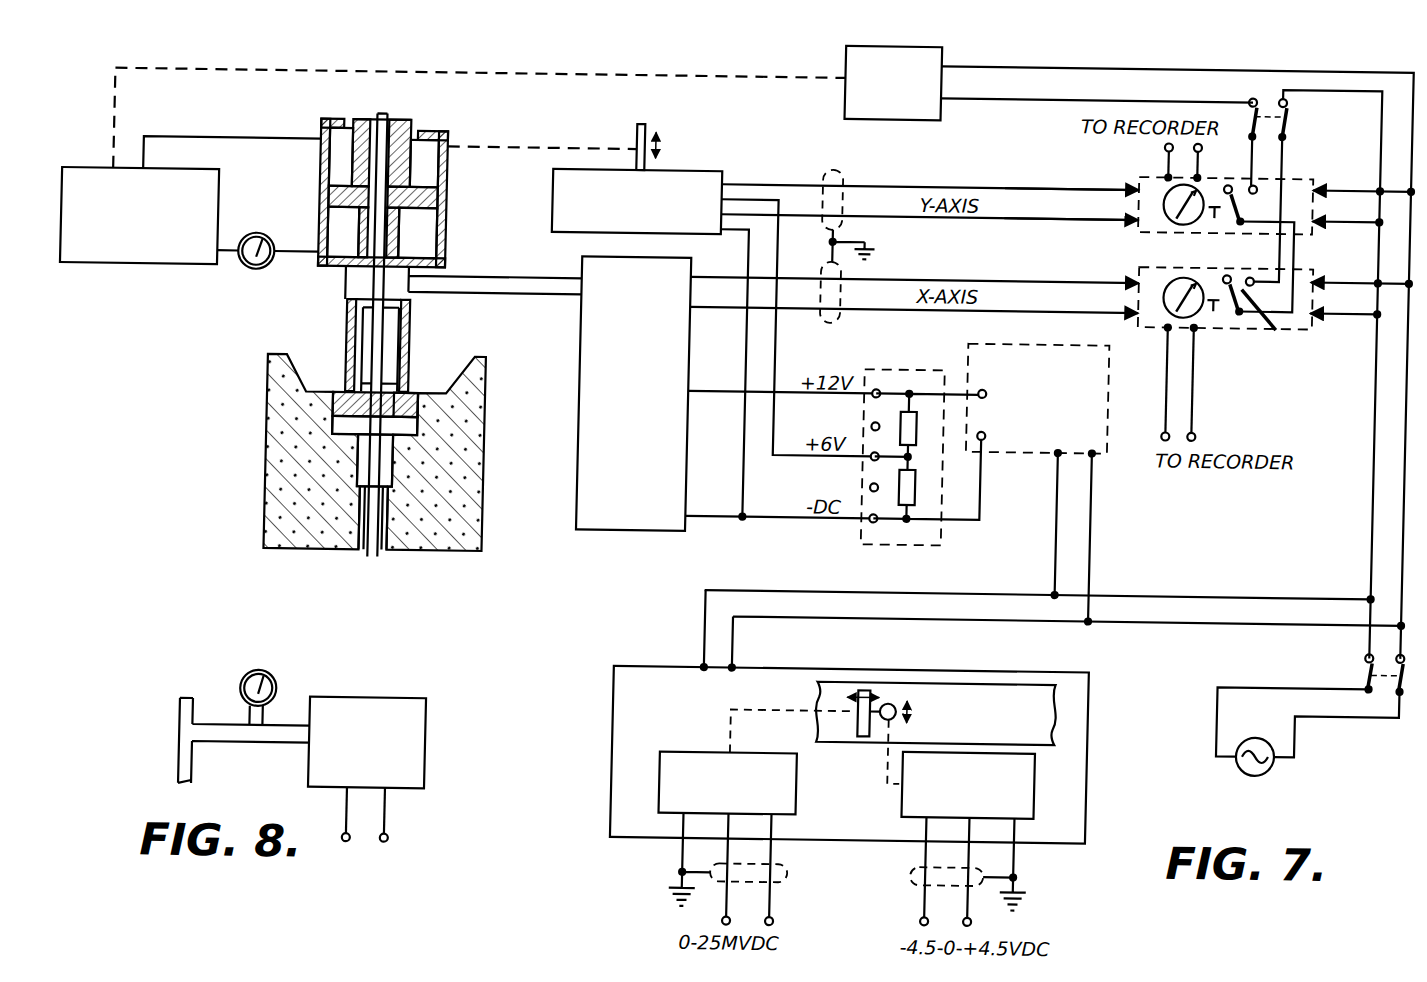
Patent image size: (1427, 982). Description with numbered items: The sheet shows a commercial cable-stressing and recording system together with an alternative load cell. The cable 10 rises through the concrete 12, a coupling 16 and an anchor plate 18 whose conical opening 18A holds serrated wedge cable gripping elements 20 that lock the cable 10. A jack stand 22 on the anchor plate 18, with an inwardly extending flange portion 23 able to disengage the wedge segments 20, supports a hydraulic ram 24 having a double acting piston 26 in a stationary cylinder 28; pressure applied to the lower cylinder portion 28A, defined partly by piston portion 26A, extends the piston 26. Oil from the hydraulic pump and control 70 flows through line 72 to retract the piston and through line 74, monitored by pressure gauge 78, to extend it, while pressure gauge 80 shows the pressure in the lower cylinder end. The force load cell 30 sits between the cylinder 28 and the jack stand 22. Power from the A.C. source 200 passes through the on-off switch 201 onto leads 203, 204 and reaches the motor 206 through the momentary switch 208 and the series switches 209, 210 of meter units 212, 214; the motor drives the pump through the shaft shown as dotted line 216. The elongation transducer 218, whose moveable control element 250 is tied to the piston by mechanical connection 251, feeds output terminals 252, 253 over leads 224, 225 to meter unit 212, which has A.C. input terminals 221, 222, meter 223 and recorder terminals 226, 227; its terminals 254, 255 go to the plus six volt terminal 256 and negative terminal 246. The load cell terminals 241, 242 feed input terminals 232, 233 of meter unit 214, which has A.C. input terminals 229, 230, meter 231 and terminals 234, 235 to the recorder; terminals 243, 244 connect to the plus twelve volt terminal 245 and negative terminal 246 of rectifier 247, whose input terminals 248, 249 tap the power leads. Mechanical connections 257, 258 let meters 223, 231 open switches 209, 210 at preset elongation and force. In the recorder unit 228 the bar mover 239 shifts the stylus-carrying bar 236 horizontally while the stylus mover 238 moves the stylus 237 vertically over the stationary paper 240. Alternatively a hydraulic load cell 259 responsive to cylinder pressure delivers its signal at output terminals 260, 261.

In FIG. 7, the cable 10 is at (370, 562).
In FIG. 7, the concrete 12 is at (459, 520).
In FIG. 7, the coupling 16 is at (364, 454).
In FIG. 7, the anchor plate 18 is at (363, 411).
In FIG. 7, the conical opening 18A is at (362, 421).
In FIG. 7, the wedge cable gripping elements 20 is at (394, 409).
In FIG. 7, the jack stand 22 is at (344, 322).
In FIG. 7, the inwardly extending flange portion 23 is at (360, 376).
In FIG. 7, the hydraulic ram 24 is at (446, 135).
In FIG. 7, the double acting piston 26 is at (403, 122).
In FIG. 7, the piston portion 26A is at (328, 206).
In FIG. 7, the cylinder 28 is at (436, 236).
In FIG. 8, the cylinder 28 is at (189, 721).
In FIG. 7, the lower cylinder portion 28A is at (415, 230).
In FIG. 7, the force load cell 30 is at (407, 294).
In FIG. 7, the hydraulic pump and control 70 is at (128, 272).
In FIG. 7, the line 72 is at (276, 143).
In FIG. 7, the line 74 is at (226, 261).
In FIG. 7, the pressure gauge 78 is at (253, 241).
In FIG. 8, the pressure gauge 80 is at (264, 677).
In FIG. 7, the A.C. source 200 is at (1287, 756).
In FIG. 7, the on-off switch 201 is at (1410, 695).
In FIG. 7, the lead 203 is at (1376, 512).
In FIG. 7, the lead 204 is at (1404, 536).
In FIG. 7, the motor 206 is at (936, 57).
In FIG. 7, the double-pole-single-throw momentary type switch 208 is at (1282, 118).
In FIG. 7, the single pole-double throw switch 209 is at (1243, 196).
In FIG. 7, the single pole-double throw switch 210 is at (1276, 330).
In FIG. 7, the meter unit 212 is at (1131, 173).
In FIG. 7, the meter unit 214 is at (1207, 340).
In FIG. 7, the mechanical connection 216 is at (523, 74).
In FIG. 7, the elongation transducer 218 is at (668, 172).
In FIG. 7, the A.C. input terminal 221 is at (1320, 183).
In FIG. 7, the A.C. input terminal 222 is at (1312, 218).
In FIG. 7, the meter 223 is at (1164, 210).
In FIG. 7, the lead 224 is at (1050, 184).
In FIG. 7, the lead 225 is at (1050, 215).
In FIG. 7, the terminal 226 is at (1196, 143).
In FIG. 7, the terminal 227 is at (1159, 141).
In FIG. 7, the recorder unit 228 is at (1097, 748).
In FIG. 7, the A.C. input terminal 229 is at (1314, 272).
In FIG. 7, the A.C. input terminal 230 is at (1316, 312).
In FIG. 7, the meter 231 is at (1163, 323).
In FIG. 7, the input terminal 232 is at (1134, 276).
In FIG. 7, the input terminal 233 is at (1163, 303).
In FIG. 7, the terminal 234 is at (1163, 427).
In FIG. 7, the terminal 235 is at (1197, 430).
In FIG. 7, the stylus-carrying bar 236 is at (871, 733).
In FIG. 7, the stylus 237 is at (898, 700).
In FIG. 7, the stylus mover 238 is at (1043, 799).
In FIG. 7, the bar mover 239 is at (688, 752).
In FIG. 7, the paper 240 is at (1066, 706).
In FIG. 7, the terminal 241 is at (692, 276).
In FIG. 7, the terminal 242 is at (692, 309).
In FIG. 7, the terminal 243 is at (692, 393).
In FIG. 7, the terminal 244 is at (692, 518).
In FIG. 7, the plus 12 volt terminal 245 is at (871, 394).
In FIG. 7, the negative terminal 246 is at (871, 518).
In FIG. 7, the rectifier 247 is at (1030, 340).
In FIG. 7, the input terminal 248 is at (1056, 450).
In FIG. 7, the input terminal 249 is at (1097, 452).
In FIG. 7, the moveable control element 250 is at (631, 131).
In FIG. 7, the mechanical connection 251 is at (502, 151).
In FIG. 7, the output terminal 252 is at (717, 186).
In FIG. 7, the output terminal 253 is at (717, 215).
In FIG. 7, the terminal 254 is at (717, 200).
In FIG. 7, the terminal 255 is at (717, 229).
In FIG. 7, the plus 6 volt terminal 256 is at (871, 456).
In FIG. 7, the mechanical connection 257 is at (1212, 225).
In FIG. 7, the mechanical connection 258 is at (1208, 330).
In FIG. 8, the hydraulic load cell 259 is at (369, 702).
In FIG. 8, the output terminal 260 is at (355, 847).
In FIG. 8, the output terminal 261 is at (397, 847).